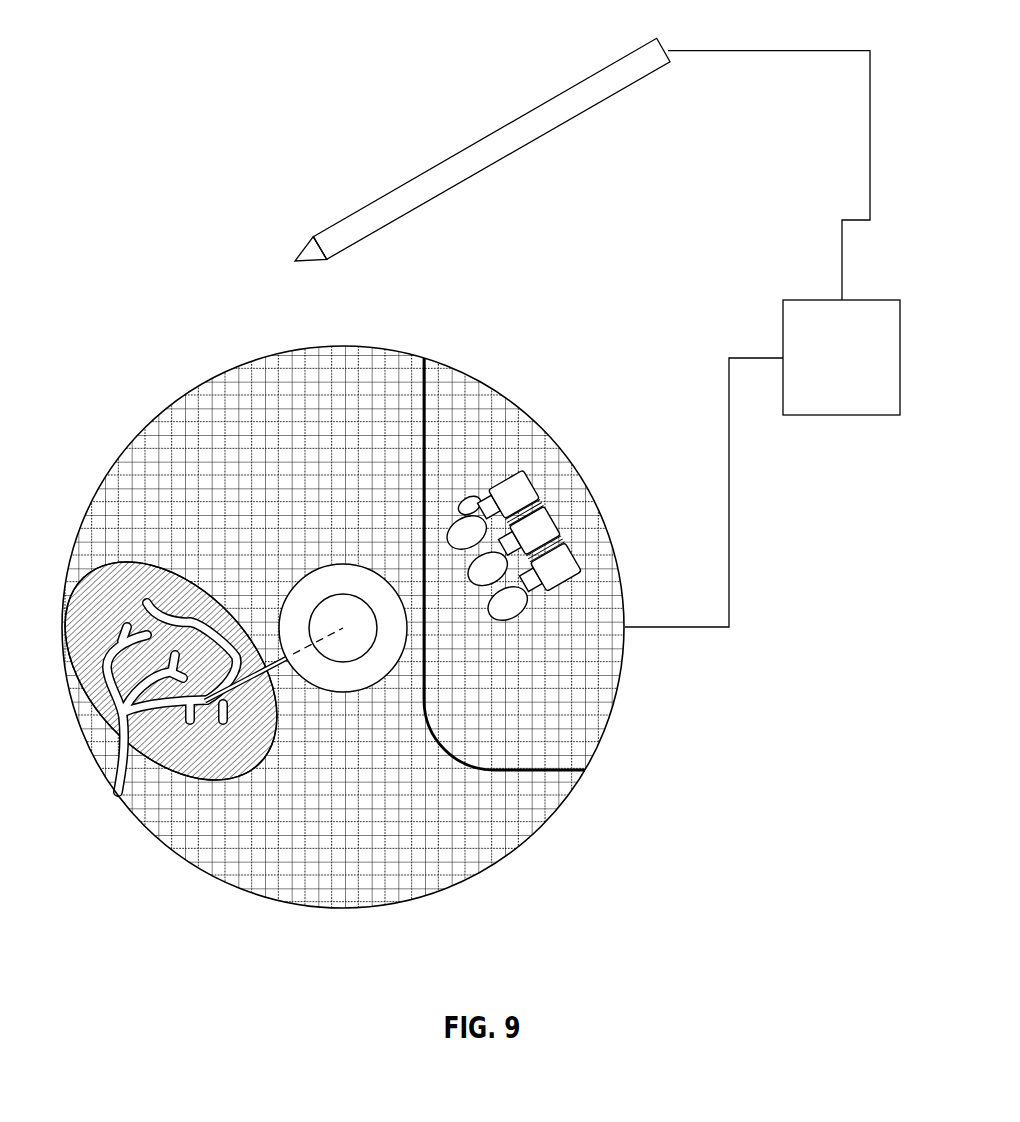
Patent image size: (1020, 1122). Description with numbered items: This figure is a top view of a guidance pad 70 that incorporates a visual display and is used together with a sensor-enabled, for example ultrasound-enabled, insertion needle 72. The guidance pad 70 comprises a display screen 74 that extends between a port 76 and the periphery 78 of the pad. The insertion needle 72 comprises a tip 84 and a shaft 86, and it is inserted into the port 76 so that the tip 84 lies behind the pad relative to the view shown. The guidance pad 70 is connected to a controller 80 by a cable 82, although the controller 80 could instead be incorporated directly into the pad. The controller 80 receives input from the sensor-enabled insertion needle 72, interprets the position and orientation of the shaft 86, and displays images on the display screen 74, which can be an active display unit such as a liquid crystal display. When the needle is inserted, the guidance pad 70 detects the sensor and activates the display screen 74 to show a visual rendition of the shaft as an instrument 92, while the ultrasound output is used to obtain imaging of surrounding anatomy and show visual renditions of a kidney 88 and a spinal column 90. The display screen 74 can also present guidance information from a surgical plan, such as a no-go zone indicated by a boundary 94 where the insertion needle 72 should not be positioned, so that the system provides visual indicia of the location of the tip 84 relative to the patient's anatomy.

The guidance pad 70 is at (338, 622).
The insertion needle 72 is at (456, 149).
The display screen 74 is at (338, 645).
The port 76 is at (331, 577).
The periphery 78 is at (106, 478).
The controller 80 is at (842, 416).
The cable 82 is at (730, 562).
The tip 84 is at (311, 243).
The shaft 86 is at (494, 140).
The kidney 88 is at (76, 672).
The spinal column 90 is at (567, 608).
The instrument 92 is at (246, 699).
The boundary 94 is at (540, 772).